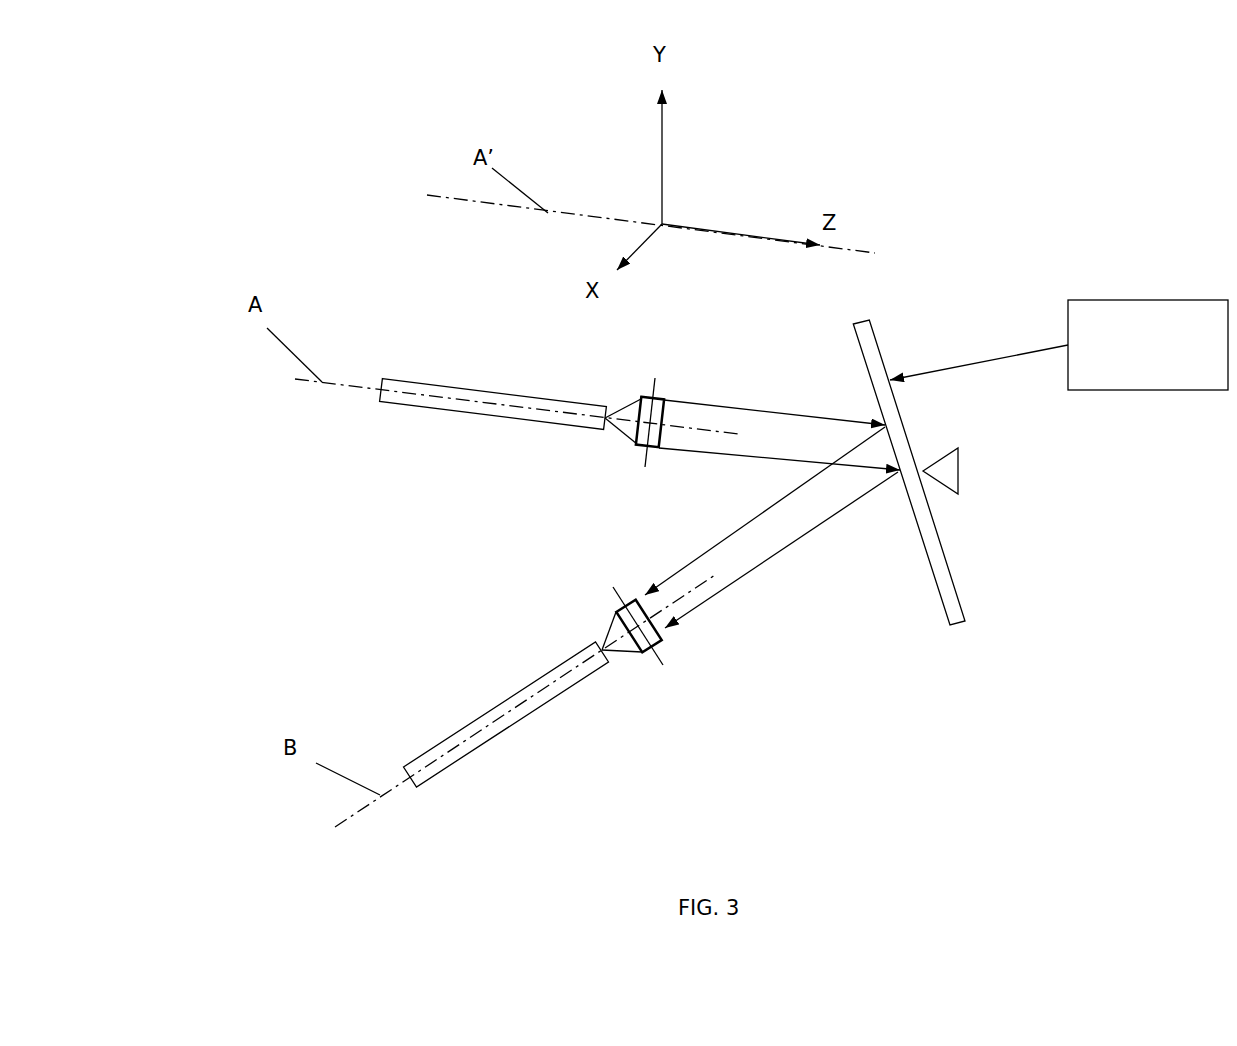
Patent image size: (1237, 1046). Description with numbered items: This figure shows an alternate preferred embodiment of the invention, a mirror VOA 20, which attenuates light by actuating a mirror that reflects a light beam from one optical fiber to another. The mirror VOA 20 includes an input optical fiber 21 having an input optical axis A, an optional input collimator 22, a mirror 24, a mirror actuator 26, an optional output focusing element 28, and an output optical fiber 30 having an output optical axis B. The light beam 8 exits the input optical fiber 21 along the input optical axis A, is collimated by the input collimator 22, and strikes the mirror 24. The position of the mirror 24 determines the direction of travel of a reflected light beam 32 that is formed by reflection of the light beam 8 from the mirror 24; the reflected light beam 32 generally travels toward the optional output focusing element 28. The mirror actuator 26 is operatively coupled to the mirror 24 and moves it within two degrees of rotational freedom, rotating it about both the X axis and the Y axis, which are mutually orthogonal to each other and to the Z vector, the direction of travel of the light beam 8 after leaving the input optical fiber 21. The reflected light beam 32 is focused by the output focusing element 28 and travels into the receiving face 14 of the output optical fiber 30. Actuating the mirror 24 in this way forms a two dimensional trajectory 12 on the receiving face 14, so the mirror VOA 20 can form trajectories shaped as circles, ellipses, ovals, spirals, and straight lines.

The light beam 8 is at (634, 404).
The two dimensional trajectory 12 is at (602, 648).
The receiving face 14 is at (597, 645).
The mirror VOA 20 is at (355, 260).
The input optical fiber 21 is at (503, 393).
The input collimator 22 is at (638, 444).
The mirror 24 is at (960, 625).
The mirror actuator 26 is at (1160, 300).
The output focusing element 28 is at (663, 665).
The output optical fiber 30 is at (552, 702).
The reflected light beam 32 is at (753, 573).